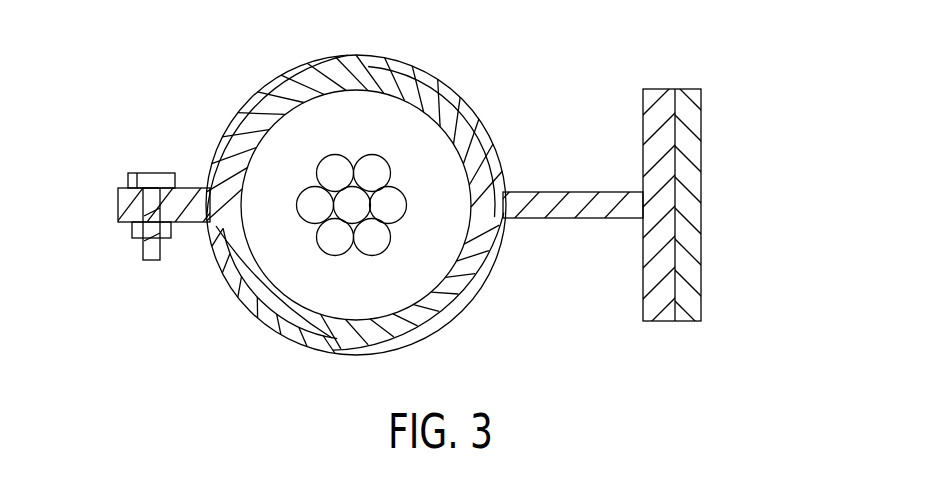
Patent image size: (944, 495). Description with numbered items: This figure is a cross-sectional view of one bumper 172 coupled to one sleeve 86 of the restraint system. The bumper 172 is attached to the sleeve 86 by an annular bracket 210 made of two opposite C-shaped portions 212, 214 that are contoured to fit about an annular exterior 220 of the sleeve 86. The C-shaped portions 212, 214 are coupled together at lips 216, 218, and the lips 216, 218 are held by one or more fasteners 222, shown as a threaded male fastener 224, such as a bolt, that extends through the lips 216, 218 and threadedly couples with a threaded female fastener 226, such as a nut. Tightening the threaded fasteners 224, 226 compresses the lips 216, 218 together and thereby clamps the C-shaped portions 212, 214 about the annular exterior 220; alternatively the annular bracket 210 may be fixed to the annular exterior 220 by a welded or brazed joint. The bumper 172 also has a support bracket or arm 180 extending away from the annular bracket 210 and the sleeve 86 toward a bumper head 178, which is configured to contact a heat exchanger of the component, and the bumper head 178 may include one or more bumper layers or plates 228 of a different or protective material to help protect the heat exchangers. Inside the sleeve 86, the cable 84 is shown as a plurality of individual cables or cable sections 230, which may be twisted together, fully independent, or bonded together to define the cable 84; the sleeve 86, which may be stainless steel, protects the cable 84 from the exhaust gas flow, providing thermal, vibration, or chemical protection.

The annular bracket 210 is at (178, 58).
The C-shaped portion 212 is at (253, 92).
The C-shaped portion 214 is at (276, 334).
The annular exterior 220 is at (487, 148).
The cable 84 is at (396, 122).
The sleeve 86 is at (273, 284).
The individual cables or cable sections 230 is at (333, 155).
The fastener 222 is at (172, 156).
The threaded male fastener 224 is at (134, 173).
The threaded female fastener 226 is at (176, 234).
The lip 216 is at (117, 200).
The lip 218 is at (117, 215).
The support bracket or arm 180 is at (557, 232).
The bumper 172 is at (740, 122).
The bumper head 178 is at (690, 60).
The bumper layer or plate 228 is at (692, 244).